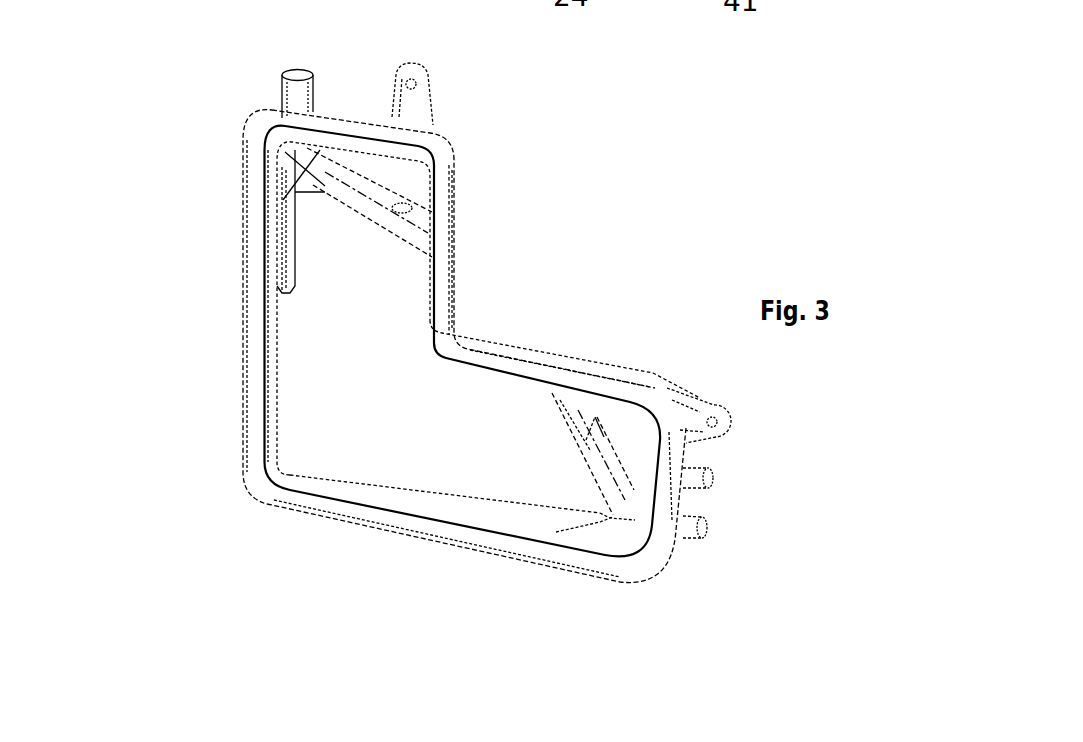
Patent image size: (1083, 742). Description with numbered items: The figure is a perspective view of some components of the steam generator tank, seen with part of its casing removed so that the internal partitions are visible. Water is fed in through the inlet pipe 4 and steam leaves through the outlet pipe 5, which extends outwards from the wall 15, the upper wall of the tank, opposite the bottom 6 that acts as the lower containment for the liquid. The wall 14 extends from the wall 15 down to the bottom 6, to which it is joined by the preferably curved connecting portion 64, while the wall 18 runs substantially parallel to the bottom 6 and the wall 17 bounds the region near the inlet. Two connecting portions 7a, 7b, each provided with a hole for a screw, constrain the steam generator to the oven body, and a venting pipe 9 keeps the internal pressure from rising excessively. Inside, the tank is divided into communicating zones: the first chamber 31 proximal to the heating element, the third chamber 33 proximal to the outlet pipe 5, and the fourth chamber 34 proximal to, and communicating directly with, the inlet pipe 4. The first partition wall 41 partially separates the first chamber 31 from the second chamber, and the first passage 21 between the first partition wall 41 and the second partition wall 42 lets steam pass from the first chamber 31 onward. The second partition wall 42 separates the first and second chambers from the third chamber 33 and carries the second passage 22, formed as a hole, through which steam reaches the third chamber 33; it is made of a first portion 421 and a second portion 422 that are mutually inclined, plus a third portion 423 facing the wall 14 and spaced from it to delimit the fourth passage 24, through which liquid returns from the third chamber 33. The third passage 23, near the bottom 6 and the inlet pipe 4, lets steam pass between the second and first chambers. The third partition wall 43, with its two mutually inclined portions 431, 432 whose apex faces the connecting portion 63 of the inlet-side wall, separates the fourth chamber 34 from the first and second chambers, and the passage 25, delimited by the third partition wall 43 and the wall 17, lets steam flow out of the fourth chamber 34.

The inlet pipe 4 is at (707, 531).
The outlet pipe 5 is at (288, 95).
The bottom 6 is at (463, 513).
The connecting portion 7a is at (413, 70).
The connecting portion 7b is at (727, 411).
The venting pipe 9 is at (712, 481).
The wall 14 is at (273, 272).
The wall 15 is at (369, 113).
The wall 17 is at (423, 180).
The wall 18 is at (647, 373).
The first passage 21 is at (308, 182).
The second passage 22 is at (410, 208).
The third passage 23 is at (567, 512).
The fourth passage 24 is at (277, 248).
The passage 25 is at (583, 410).
The first chamber 31 is at (385, 369).
The third chamber 33 is at (425, 187).
The fourth chamber 34 is at (659, 453).
The first partition wall 41 is at (300, 377).
The second partition wall 42 is at (328, 150).
The third partition wall 43 is at (618, 486).
The connecting portion 63 is at (643, 533).
The connecting portion 64 is at (280, 472).
The first portion 421 is at (357, 178).
The second portion 422 is at (301, 167).
The third portion 423 is at (283, 232).
The portion 431 is at (608, 472).
The portion 432 is at (597, 517).